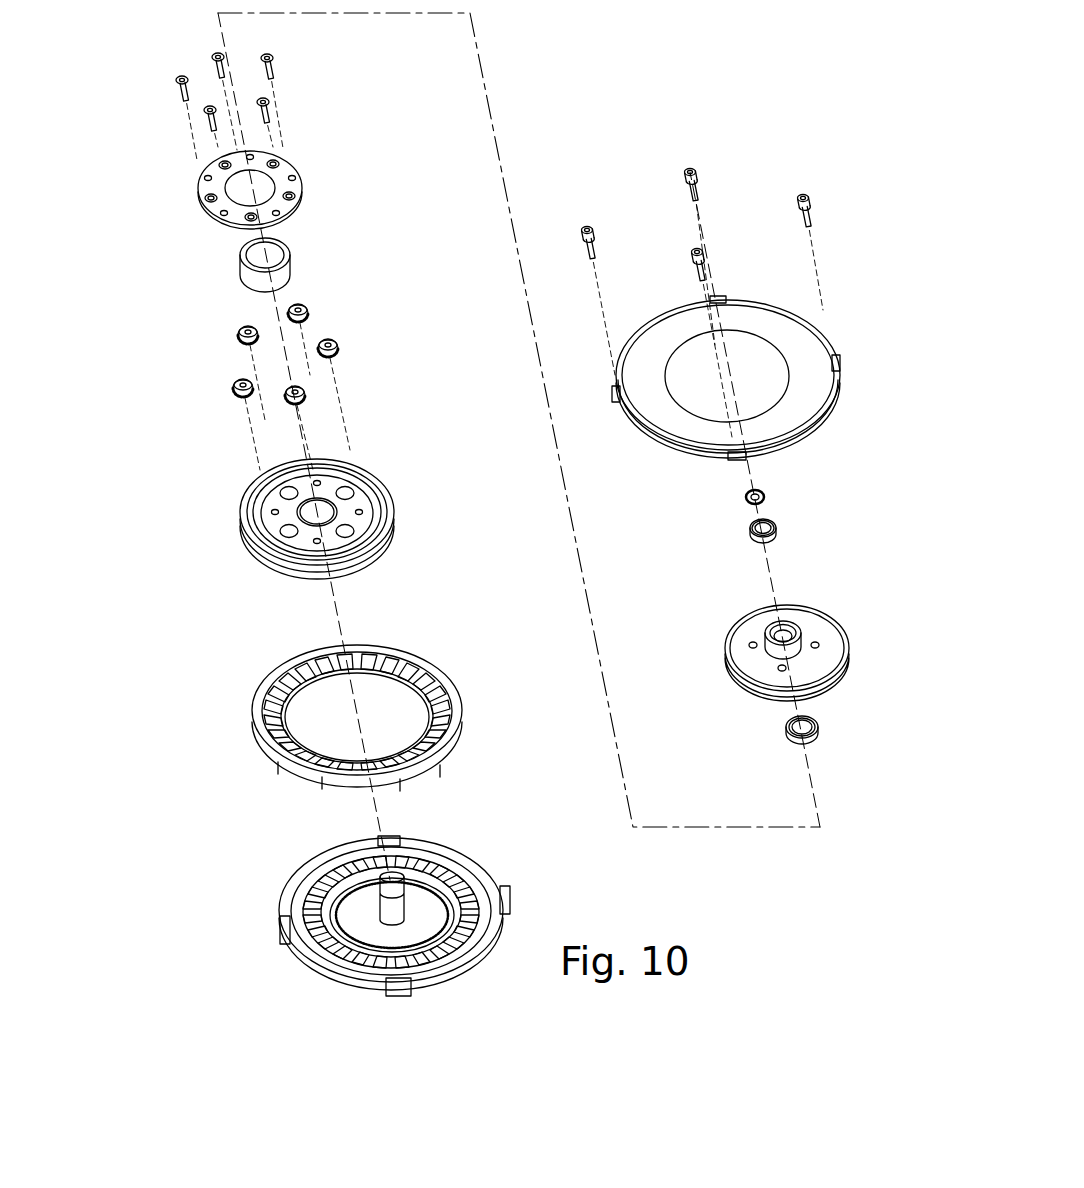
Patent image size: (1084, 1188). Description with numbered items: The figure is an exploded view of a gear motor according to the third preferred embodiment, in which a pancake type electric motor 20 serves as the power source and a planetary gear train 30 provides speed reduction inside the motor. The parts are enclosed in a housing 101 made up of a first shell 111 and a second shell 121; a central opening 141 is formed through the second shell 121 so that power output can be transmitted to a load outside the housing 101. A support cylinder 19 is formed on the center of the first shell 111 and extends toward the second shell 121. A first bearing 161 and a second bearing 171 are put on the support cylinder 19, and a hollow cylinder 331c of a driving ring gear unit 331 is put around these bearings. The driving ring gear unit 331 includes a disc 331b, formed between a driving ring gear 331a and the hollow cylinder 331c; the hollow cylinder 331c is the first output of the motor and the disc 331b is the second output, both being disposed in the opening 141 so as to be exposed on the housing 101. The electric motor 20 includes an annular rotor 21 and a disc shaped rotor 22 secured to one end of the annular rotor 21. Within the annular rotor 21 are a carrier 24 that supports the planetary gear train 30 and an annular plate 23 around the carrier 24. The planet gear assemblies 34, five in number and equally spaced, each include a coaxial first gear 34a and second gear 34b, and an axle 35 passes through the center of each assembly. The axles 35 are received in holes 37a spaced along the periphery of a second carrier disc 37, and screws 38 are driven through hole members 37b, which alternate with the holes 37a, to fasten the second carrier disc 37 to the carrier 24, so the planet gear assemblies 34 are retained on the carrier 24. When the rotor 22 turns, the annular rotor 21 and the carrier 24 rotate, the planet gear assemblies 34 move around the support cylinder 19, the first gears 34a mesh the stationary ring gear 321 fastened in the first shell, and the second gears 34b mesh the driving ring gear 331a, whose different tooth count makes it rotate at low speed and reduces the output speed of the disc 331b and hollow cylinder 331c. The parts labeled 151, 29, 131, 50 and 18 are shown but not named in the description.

The planetary gear train 30 is at (365, 88).
The electric motor 20 is at (248, 636).
The screws 38 is at (178, 85).
The second carrier disc 37 is at (236, 185).
The holes 37a is at (205, 190).
The hole members 37b is at (292, 182).
The bushing 151 is at (292, 260).
The axles 35 is at (238, 325).
The planet gear assemblies 34 is at (393, 376).
The first gear 34a is at (340, 352).
The second gear 34b is at (335, 342).
The annular rotor 21 is at (328, 530).
The rotor 22 is at (318, 570).
The annular plate 23 is at (372, 497).
The carrier 24 is at (262, 498).
The stator core with coils 29 is at (458, 692).
The first shell 111 is at (382, 924).
The housing flange 131 is at (308, 888).
The support cylinder 19 is at (382, 856).
The stationary ring gear 321 is at (420, 910).
The cap screws 50 is at (686, 192).
The housing 101 is at (720, 499).
The second shell 121 is at (798, 340).
The central opening 141 is at (687, 395).
The washer 18 is at (745, 495).
The second bearing 171 is at (776, 520).
The driving ring gear unit 331 is at (737, 675).
The driving ring gear 331a is at (775, 693).
The disc 331b is at (742, 652).
The hollow cylinder 331c is at (770, 626).
The first bearing 161 is at (818, 720).